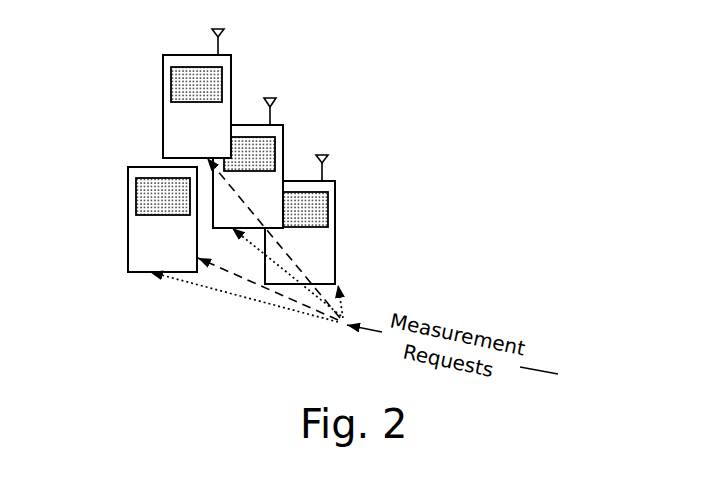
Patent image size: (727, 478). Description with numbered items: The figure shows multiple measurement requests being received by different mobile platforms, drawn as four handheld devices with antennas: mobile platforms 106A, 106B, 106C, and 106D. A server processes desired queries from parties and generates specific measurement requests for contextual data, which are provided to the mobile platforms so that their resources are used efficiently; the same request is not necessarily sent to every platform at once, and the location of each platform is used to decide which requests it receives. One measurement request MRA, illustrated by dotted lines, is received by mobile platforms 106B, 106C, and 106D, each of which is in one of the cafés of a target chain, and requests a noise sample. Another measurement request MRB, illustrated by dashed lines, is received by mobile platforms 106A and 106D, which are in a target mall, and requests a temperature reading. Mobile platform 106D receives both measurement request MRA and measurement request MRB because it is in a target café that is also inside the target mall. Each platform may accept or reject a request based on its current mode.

The mobile platform 106A is at (231, 66).
The mobile platform 106B is at (283, 137).
The mobile platform 106C is at (335, 205).
The mobile platform 106D is at (128, 227).
The measurement request MRA is at (338, 311).
The measurement request MRB is at (283, 291).